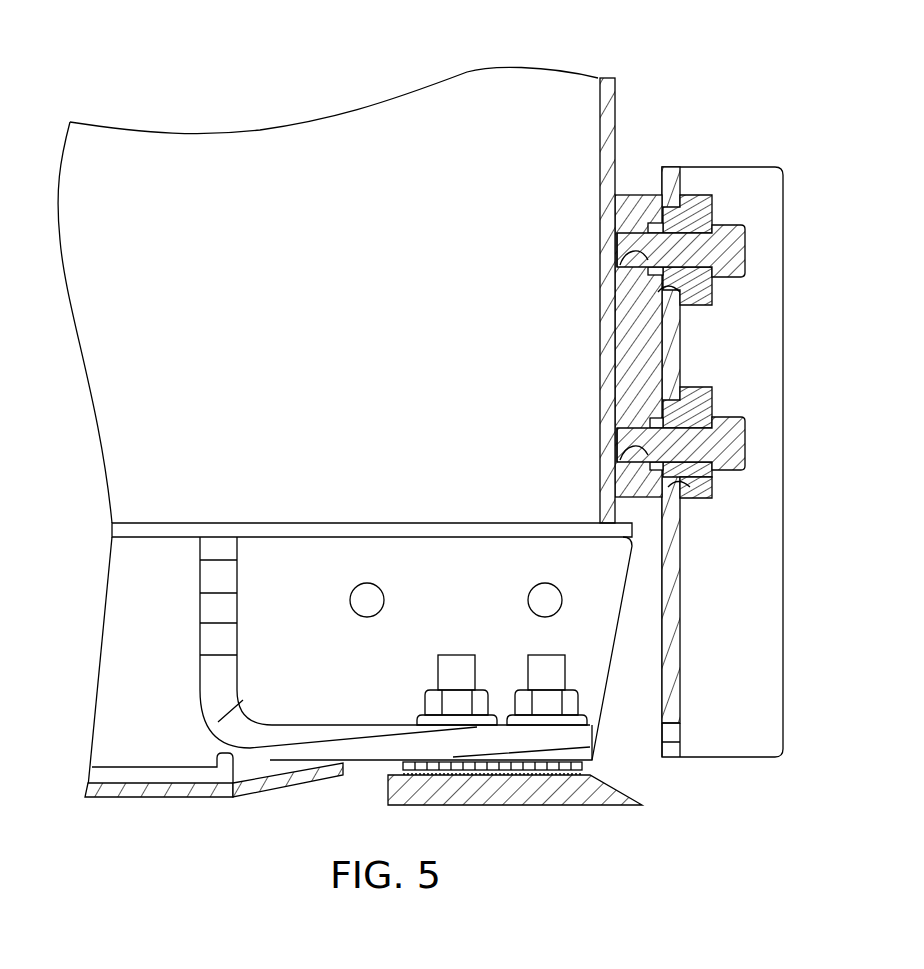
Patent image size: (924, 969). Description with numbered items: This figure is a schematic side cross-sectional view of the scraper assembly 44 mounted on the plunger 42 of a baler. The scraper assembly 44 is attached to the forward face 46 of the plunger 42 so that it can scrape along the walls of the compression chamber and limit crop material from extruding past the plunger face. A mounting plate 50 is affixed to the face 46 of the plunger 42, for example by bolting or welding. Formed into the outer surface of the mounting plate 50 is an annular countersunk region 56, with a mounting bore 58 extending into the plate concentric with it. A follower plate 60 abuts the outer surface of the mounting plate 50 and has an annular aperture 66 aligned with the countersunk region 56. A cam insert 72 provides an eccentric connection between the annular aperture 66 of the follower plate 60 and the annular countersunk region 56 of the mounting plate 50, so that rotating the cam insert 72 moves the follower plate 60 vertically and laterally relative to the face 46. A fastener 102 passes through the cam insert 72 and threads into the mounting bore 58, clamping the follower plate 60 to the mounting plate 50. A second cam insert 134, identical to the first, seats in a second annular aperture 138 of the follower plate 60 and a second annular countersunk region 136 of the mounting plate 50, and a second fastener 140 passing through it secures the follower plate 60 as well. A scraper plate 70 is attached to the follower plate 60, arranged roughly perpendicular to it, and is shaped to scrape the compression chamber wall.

The plunger 42 is at (222, 128).
The scraper assembly 44 is at (673, 213).
The forward face 46 is at (617, 87).
The mounting plate 50 is at (638, 173).
The annular countersunk region 56 is at (655, 230).
The mounting bore 58 is at (612, 247).
The follower plate 60 is at (672, 703).
The annular aperture 66 is at (680, 277).
The scraper plate 70 is at (768, 180).
The cam insert 72 is at (693, 197).
The fastener 102 is at (745, 257).
The second cam insert 134 is at (705, 500).
The second annular countersunk region 136 is at (620, 443).
The second annular aperture 138 is at (690, 500).
The second fastener 140 is at (745, 442).